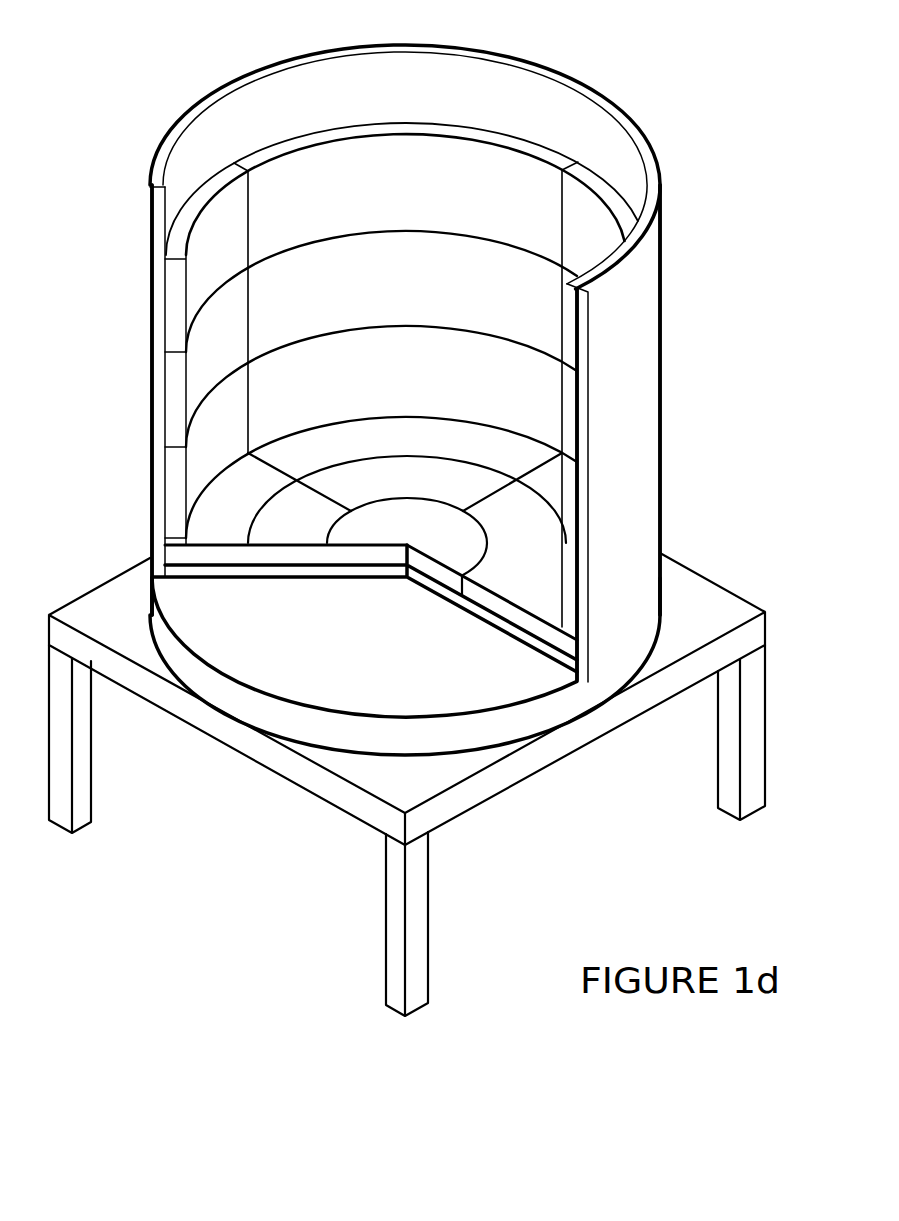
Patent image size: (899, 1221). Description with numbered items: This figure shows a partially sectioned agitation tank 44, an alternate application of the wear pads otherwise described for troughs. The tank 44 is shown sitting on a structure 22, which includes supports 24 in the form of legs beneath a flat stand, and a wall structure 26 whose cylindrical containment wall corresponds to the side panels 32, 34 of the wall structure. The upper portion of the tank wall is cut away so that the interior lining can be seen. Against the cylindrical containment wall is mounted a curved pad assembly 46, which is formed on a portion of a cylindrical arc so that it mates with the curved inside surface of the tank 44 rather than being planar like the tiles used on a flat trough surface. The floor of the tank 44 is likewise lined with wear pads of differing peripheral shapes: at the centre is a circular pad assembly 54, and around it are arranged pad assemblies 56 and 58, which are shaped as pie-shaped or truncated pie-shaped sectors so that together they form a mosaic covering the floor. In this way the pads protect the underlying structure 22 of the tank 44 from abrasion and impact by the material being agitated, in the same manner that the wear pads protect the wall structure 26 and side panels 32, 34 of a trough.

The agitation tank 44 is at (230, 88).
The pad assembly 46 is at (190, 258).
The side panel 32 is at (638, 292).
The side panel 34 is at (638, 292).
The pad assembly 56 is at (273, 525).
The pad assembly 58 is at (198, 530).
The structure 22 is at (167, 597).
The wall structure 26 is at (160, 620).
The pad assembly 54 is at (425, 512).
The supports 24 is at (80, 778).